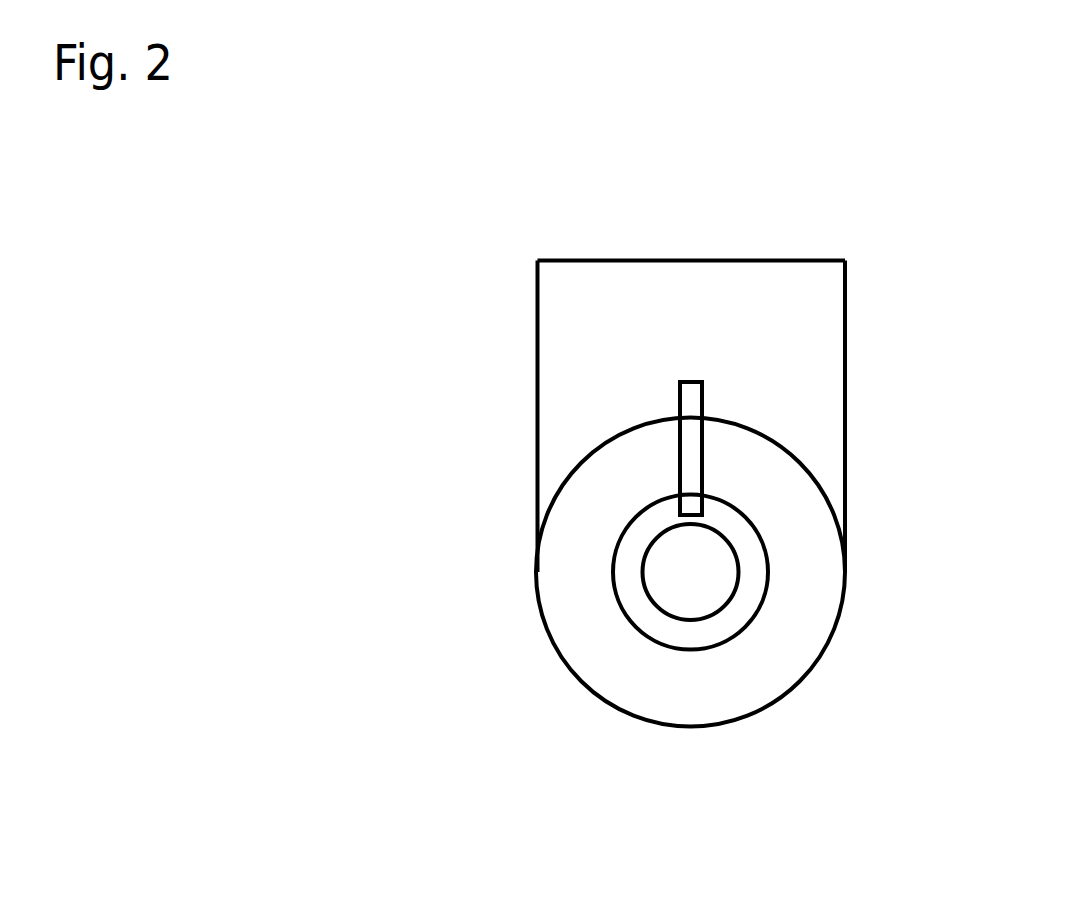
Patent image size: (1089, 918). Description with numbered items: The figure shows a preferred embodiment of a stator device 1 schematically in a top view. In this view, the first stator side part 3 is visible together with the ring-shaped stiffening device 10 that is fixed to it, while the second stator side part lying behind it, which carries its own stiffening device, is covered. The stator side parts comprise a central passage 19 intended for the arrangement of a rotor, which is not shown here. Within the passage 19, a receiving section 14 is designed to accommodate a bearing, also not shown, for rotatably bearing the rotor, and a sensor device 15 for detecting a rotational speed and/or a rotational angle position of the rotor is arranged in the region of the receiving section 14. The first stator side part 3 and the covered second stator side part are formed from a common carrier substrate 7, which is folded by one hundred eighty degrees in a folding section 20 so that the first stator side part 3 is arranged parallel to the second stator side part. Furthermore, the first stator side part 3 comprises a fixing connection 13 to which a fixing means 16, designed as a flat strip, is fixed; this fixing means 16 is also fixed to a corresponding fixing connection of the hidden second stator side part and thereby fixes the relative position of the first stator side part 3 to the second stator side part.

The stator device 1 is at (682, 240).
The folding section 20 is at (856, 260).
The carrier substrate 7 is at (565, 285).
The first stator side part 3 is at (595, 352).
The fixing means 16 is at (690, 470).
The fixing connection 13 is at (712, 382).
The ring-shaped stiffening device 10 is at (573, 585).
The sensor device 15 is at (688, 526).
The receiving section 14 is at (727, 573).
The central passage 19 is at (694, 607).